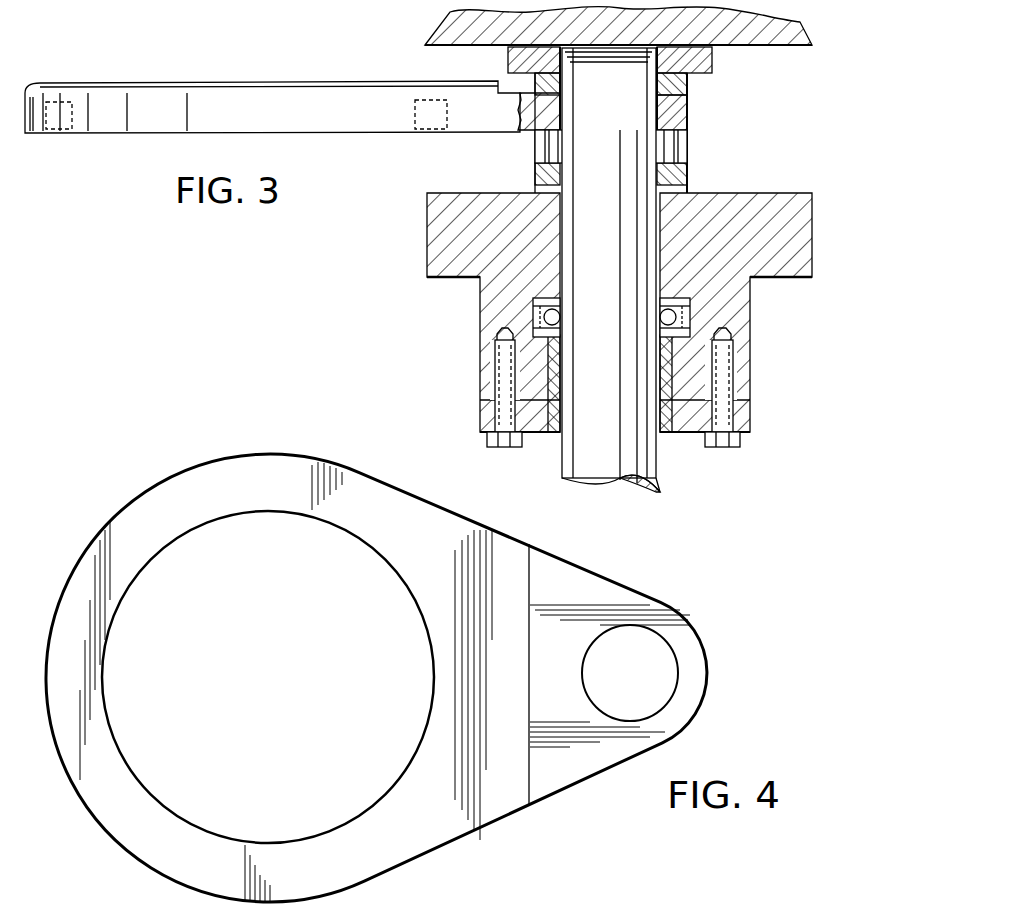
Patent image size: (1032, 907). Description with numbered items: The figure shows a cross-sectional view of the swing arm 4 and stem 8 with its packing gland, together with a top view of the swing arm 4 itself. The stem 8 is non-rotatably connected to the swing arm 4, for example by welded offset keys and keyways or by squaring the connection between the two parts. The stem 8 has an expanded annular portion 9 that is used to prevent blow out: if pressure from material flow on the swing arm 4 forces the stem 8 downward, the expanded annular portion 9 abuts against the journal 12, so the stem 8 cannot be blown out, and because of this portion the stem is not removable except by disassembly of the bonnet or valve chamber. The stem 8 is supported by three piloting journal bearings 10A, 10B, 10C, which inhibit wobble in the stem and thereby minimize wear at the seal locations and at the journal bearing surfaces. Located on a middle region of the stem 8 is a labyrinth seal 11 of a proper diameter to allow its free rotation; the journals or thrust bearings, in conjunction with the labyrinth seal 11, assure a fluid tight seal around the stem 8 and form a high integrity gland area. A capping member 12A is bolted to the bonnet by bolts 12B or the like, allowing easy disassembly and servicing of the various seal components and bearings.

In FIG. 3, the swing arm 4 is at (258, 95).
In FIG. 4, the swing arm 4 is at (460, 822).
In FIG. 3, the stem 8 is at (635, 108).
In FIG. 3, the expanded annular portion 9 is at (540, 150).
In FIG. 3, the piloting journal bearing 10A is at (520, 75).
In FIG. 3, the piloting journal bearing 10B is at (492, 250).
In FIG. 3, the piloting journal bearing 10C is at (555, 376).
In FIG. 3, the labyrinth seal 11 is at (540, 315).
In FIG. 3, the journal 12 is at (540, 172).
In FIG. 3, the capping member 12A is at (540, 432).
In FIG. 3, the bolts 12B is at (500, 388).